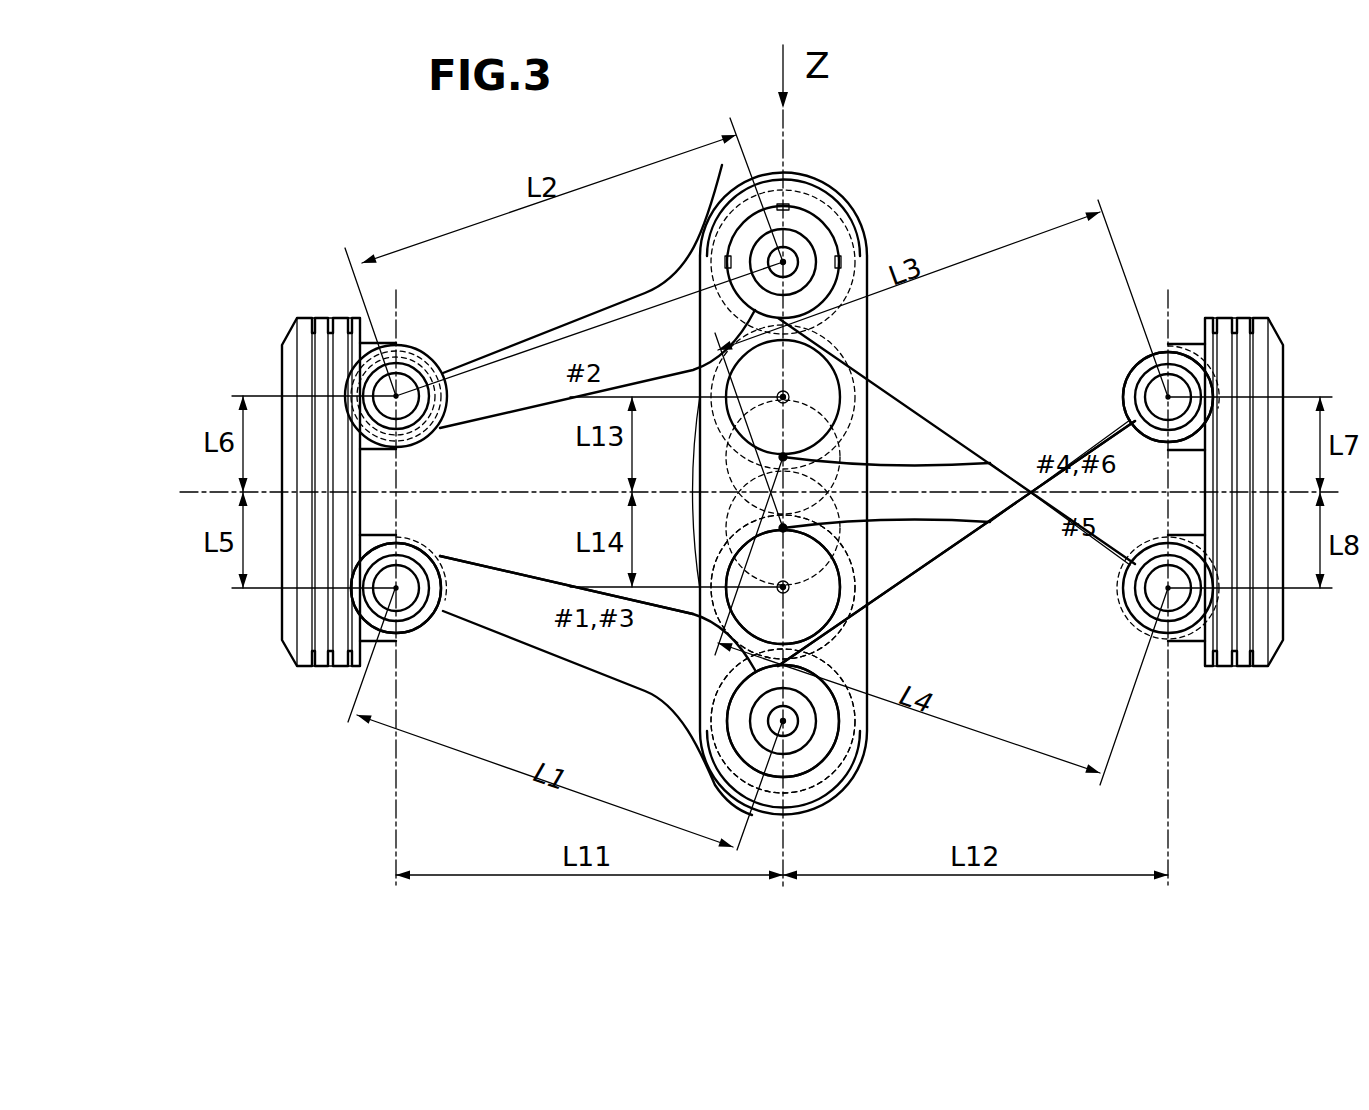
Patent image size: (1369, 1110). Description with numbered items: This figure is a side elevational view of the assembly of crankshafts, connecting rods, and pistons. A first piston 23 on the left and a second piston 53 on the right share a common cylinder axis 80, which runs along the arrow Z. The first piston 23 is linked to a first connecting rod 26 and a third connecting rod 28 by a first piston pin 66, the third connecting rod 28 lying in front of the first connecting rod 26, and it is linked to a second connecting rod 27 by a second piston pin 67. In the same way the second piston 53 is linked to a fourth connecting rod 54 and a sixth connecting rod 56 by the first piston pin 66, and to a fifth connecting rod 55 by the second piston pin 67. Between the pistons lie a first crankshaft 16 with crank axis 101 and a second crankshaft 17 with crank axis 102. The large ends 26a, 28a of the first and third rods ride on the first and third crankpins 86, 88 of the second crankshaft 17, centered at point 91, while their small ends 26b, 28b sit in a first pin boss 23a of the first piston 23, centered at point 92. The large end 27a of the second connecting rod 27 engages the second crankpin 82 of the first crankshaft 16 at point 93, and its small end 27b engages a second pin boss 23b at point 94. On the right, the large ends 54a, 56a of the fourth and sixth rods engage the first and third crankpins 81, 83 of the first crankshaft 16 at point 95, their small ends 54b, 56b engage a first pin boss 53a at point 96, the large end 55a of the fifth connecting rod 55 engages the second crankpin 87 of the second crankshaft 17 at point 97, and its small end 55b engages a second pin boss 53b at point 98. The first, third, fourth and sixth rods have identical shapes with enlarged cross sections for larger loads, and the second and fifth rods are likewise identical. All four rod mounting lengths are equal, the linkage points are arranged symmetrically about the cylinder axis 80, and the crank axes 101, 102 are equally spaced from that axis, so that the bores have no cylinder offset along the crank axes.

The first crankshaft 16 is at (858, 206).
The second crankshaft 17 is at (868, 728).
The first piston 23 is at (283, 338).
The first pin boss 23a is at (353, 628).
The second pin boss 23b is at (358, 342).
The first connecting rod 26 is at (645, 690).
The third connecting rod 28 is at (566, 585).
The large end of first connecting rod 26a is at (862, 764).
The large end of third connecting rod 28a is at (783, 721).
The small end of first connecting rod 26b is at (415, 548).
The small end of third connecting rod 28b is at (396, 588).
The second connecting rod 27 is at (642, 296).
The large end of second connecting rod 27a is at (790, 178).
The small end of second connecting rod 27b is at (445, 412).
The second piston 53 is at (1283, 340).
The first pin boss 53a is at (1193, 350).
The second pin boss 53b is at (1205, 660).
The fourth connecting rod 54 is at (1030, 447).
The sixth connecting rod 56 is at (956, 543).
The large end of fourth connecting rod 54a is at (900, 626).
The large end of sixth connecting rod 56a is at (783, 587).
The small end of fourth connecting rod 54b is at (1135, 355).
The small end of sixth connecting rod 56b is at (1168, 397).
The fifth connecting rod 55 is at (1037, 540).
The large end of fifth connecting rod 55a is at (868, 360).
The small end of fifth connecting rod 55b is at (1140, 660).
The first piston pin 66 is at (435, 612).
The second piston pin 67 is at (440, 372).
The cylinder axis 80 is at (180, 490).
The first crankpin of first crankshaft 81 is at (912, 562).
The third crankpin of first crankshaft 83 is at (783, 587).
The second crankpin of first crankshaft 82 is at (870, 238).
The first crankpin of second crankshaft 86 is at (824, 784).
The third crankpin of second crankshaft 88 is at (783, 721).
The second crankpin of second crankshaft 87 is at (905, 427).
The point 91 is at (778, 724).
The point 92 is at (418, 605).
The point 93 is at (778, 260).
The point 94 is at (412, 380).
The point 95 is at (865, 560).
The point 96 is at (1125, 383).
The point 97 is at (870, 412).
The point 98 is at (1133, 620).
The crank axis 101 is at (800, 442).
The crank axis 102 is at (858, 628).